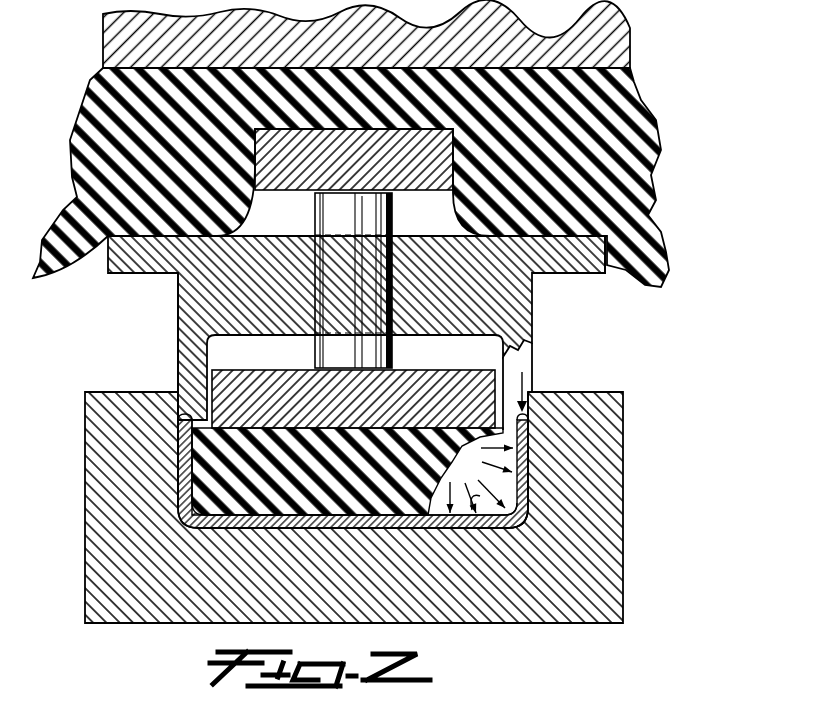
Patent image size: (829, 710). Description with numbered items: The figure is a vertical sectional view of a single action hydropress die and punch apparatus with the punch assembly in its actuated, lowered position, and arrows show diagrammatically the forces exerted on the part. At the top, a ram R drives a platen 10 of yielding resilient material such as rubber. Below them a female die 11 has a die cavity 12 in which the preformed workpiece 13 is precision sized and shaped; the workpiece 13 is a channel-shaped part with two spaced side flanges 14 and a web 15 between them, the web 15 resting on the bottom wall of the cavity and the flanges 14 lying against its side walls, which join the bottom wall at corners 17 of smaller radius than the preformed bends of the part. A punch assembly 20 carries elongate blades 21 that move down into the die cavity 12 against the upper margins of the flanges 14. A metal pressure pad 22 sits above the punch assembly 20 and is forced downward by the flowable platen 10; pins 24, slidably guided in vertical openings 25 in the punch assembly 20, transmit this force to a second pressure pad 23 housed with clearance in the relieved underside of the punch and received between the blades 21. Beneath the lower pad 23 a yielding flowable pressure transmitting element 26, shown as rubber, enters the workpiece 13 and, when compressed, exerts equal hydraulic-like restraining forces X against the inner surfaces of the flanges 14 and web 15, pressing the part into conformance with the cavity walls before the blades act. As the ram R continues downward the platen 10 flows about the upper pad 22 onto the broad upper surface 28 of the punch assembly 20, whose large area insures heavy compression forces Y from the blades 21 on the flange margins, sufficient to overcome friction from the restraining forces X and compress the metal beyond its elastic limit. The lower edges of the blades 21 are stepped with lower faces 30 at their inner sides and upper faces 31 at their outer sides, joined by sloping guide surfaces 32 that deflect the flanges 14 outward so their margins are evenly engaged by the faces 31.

The ram R is at (615, 48).
The platen 10 is at (620, 130).
The female die 11 is at (597, 507).
The die cavity 12 is at (173, 490).
The workpiece 13 is at (243, 525).
The side flanges 14 is at (533, 448).
The web 15 is at (443, 523).
The radii or corners 17 is at (527, 512).
The punch assembly 20 is at (200, 297).
The blades 21 is at (198, 392).
The pressure pad 22 is at (298, 178).
The second pressure pad 23 is at (448, 382).
The pins 24 is at (322, 346).
The vertical openings 25 is at (390, 234).
The pressure transmitting element 26 is at (173, 453).
The upper surface 28 is at (578, 226).
The lower faces 30 is at (180, 440).
The upper faces 31 is at (180, 425).
The guide surfaces 32 is at (527, 431).
The restraining forces X is at (477, 497).
The compression forces Y is at (530, 380).